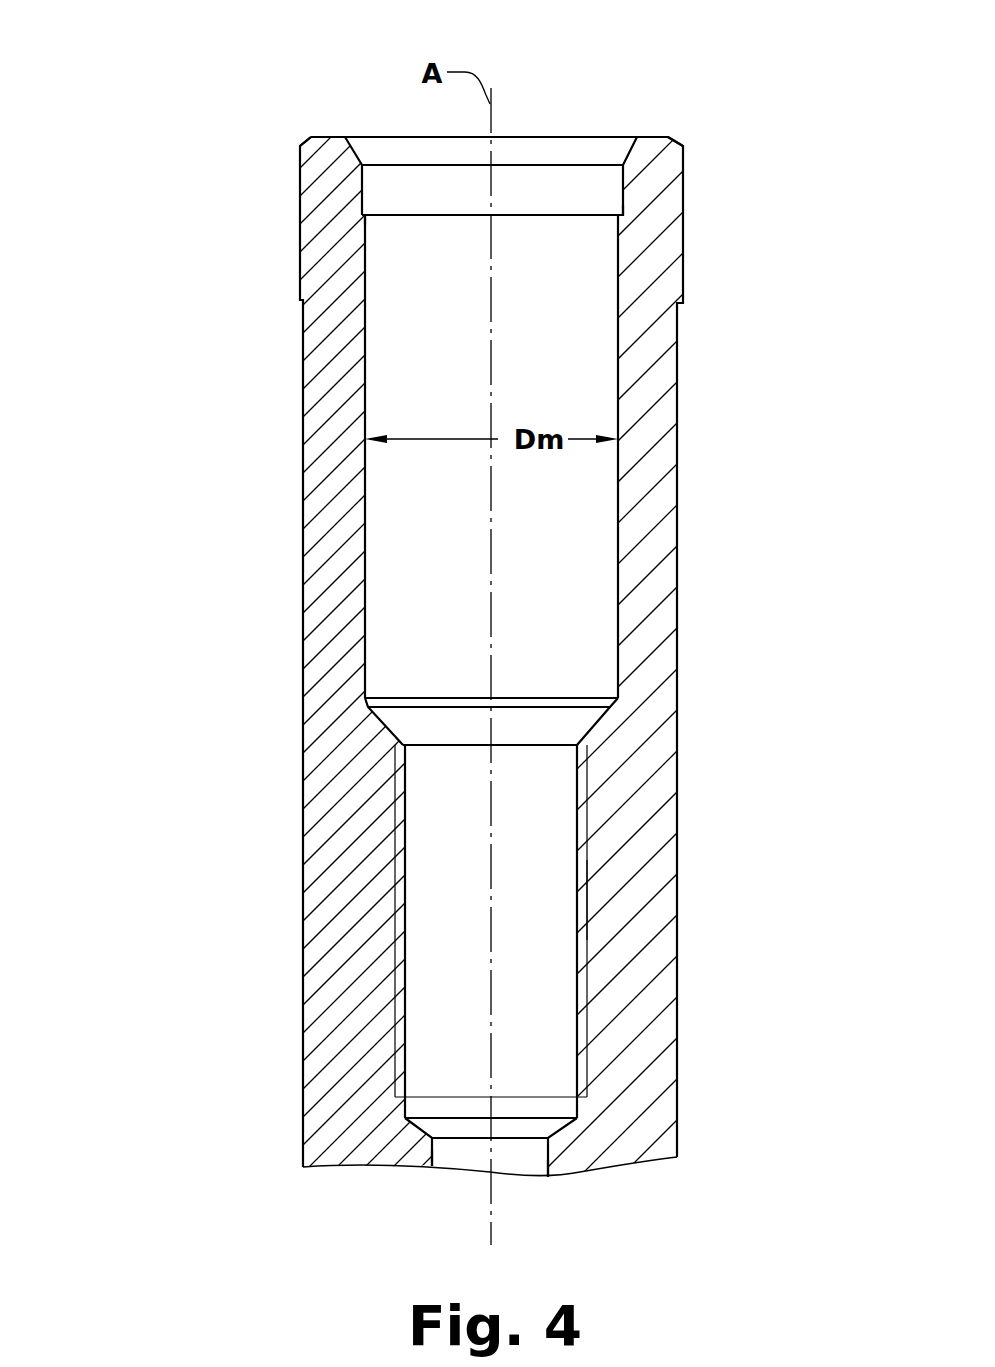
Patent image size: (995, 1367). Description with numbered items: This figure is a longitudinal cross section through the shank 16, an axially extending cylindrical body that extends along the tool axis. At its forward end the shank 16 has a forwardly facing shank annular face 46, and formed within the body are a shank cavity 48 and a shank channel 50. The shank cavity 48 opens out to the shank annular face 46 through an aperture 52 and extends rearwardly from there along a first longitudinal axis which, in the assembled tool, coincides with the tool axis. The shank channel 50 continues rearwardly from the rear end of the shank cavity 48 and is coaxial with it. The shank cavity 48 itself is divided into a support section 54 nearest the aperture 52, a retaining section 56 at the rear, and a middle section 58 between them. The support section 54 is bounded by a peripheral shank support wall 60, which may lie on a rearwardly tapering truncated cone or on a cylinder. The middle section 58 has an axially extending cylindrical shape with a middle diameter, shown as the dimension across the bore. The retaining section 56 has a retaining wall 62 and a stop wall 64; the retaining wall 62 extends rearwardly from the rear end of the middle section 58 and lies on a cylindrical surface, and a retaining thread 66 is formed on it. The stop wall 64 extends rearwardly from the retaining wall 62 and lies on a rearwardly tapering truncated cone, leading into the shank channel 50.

The shank 16 is at (145, 106).
The shank annular face 46 is at (330, 137).
The shank cavity 48 is at (580, 573).
The shank channel 50 is at (540, 1188).
The aperture 52 is at (633, 137).
The support section 54 is at (600, 182).
The retaining section 56 is at (555, 783).
The middle section 58 is at (600, 361).
The shank support wall 60 is at (624, 200).
The retaining wall 62 is at (555, 1000).
The stop wall 64 is at (557, 1136).
The retaining thread 66 is at (577, 883).